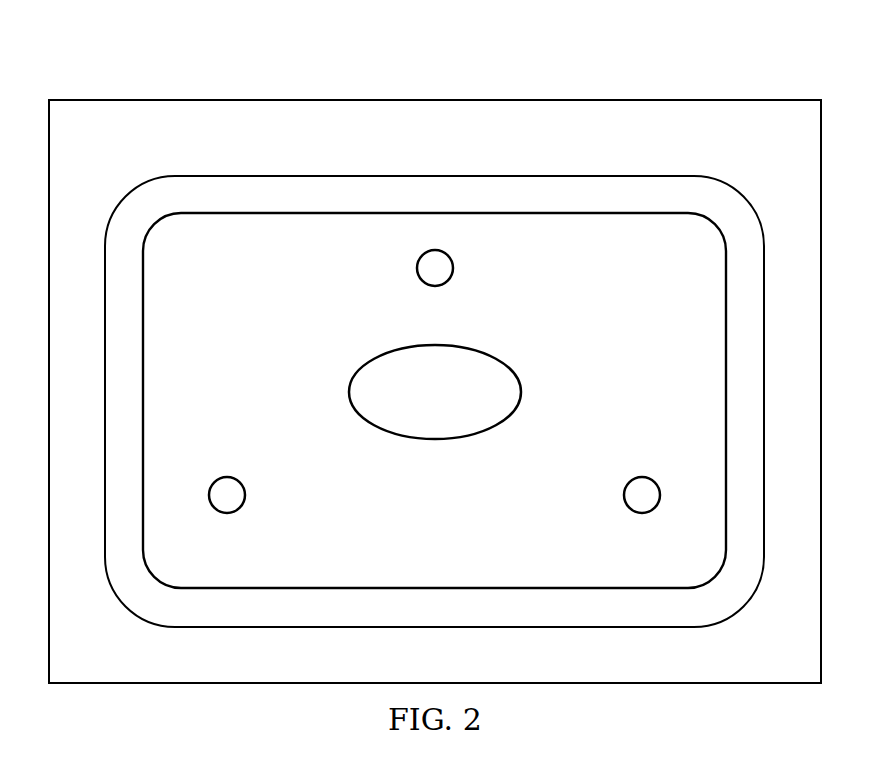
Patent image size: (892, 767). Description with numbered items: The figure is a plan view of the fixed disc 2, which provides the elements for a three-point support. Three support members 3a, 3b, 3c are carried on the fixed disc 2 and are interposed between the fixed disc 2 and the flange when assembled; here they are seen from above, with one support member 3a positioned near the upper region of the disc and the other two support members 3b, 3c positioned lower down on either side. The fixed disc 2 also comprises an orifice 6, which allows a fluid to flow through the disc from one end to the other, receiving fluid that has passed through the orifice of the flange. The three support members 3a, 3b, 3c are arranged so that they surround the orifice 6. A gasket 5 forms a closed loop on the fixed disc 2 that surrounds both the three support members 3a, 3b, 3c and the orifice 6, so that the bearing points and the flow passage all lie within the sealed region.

The fixed disc 2 is at (284, 81).
The gasket 5 is at (433, 175).
The support member 3a is at (417, 270).
The support member 3b is at (209, 490).
The support member 3c is at (661, 497).
The orifice 6 is at (443, 403).